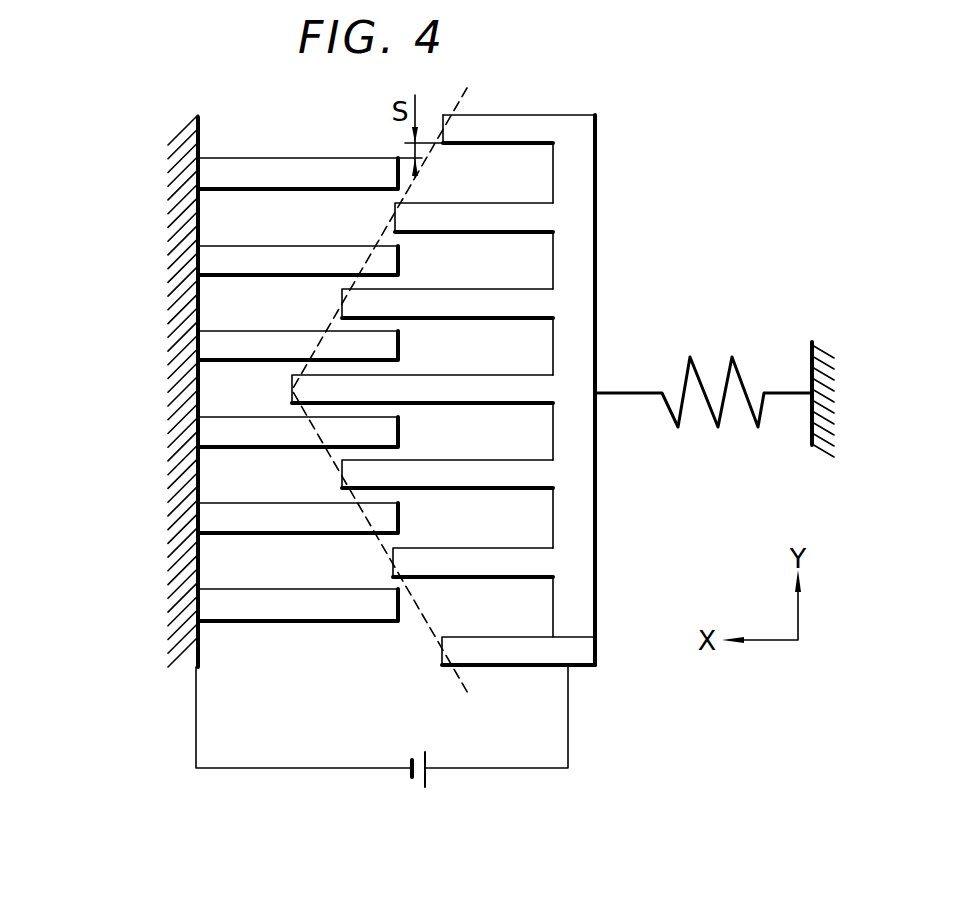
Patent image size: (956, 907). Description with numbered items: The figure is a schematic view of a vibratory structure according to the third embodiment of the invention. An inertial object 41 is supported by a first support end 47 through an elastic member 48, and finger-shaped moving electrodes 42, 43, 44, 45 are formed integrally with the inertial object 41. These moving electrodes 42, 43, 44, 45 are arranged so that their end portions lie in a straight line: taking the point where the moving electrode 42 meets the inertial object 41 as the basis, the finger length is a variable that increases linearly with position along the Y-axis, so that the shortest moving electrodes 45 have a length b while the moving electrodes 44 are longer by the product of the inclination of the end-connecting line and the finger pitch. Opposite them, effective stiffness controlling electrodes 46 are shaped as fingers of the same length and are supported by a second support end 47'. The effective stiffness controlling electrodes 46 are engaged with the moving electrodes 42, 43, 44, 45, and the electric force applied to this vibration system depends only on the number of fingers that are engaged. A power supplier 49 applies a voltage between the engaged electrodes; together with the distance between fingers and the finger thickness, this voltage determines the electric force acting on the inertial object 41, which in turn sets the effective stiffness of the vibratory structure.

The inertial object 41 is at (595, 272).
The moving electrode 42 is at (487, 395).
The moving electrode 43 is at (487, 306).
The moving electrode 44 is at (490, 213).
The moving electrode 45 is at (515, 128).
The effective stiffness controlling electrodes 46 is at (217, 607).
The first support end 47 is at (819, 435).
The second support end 47' is at (159, 358).
The elastic member 48 is at (757, 422).
The power supplier 49 is at (410, 768).